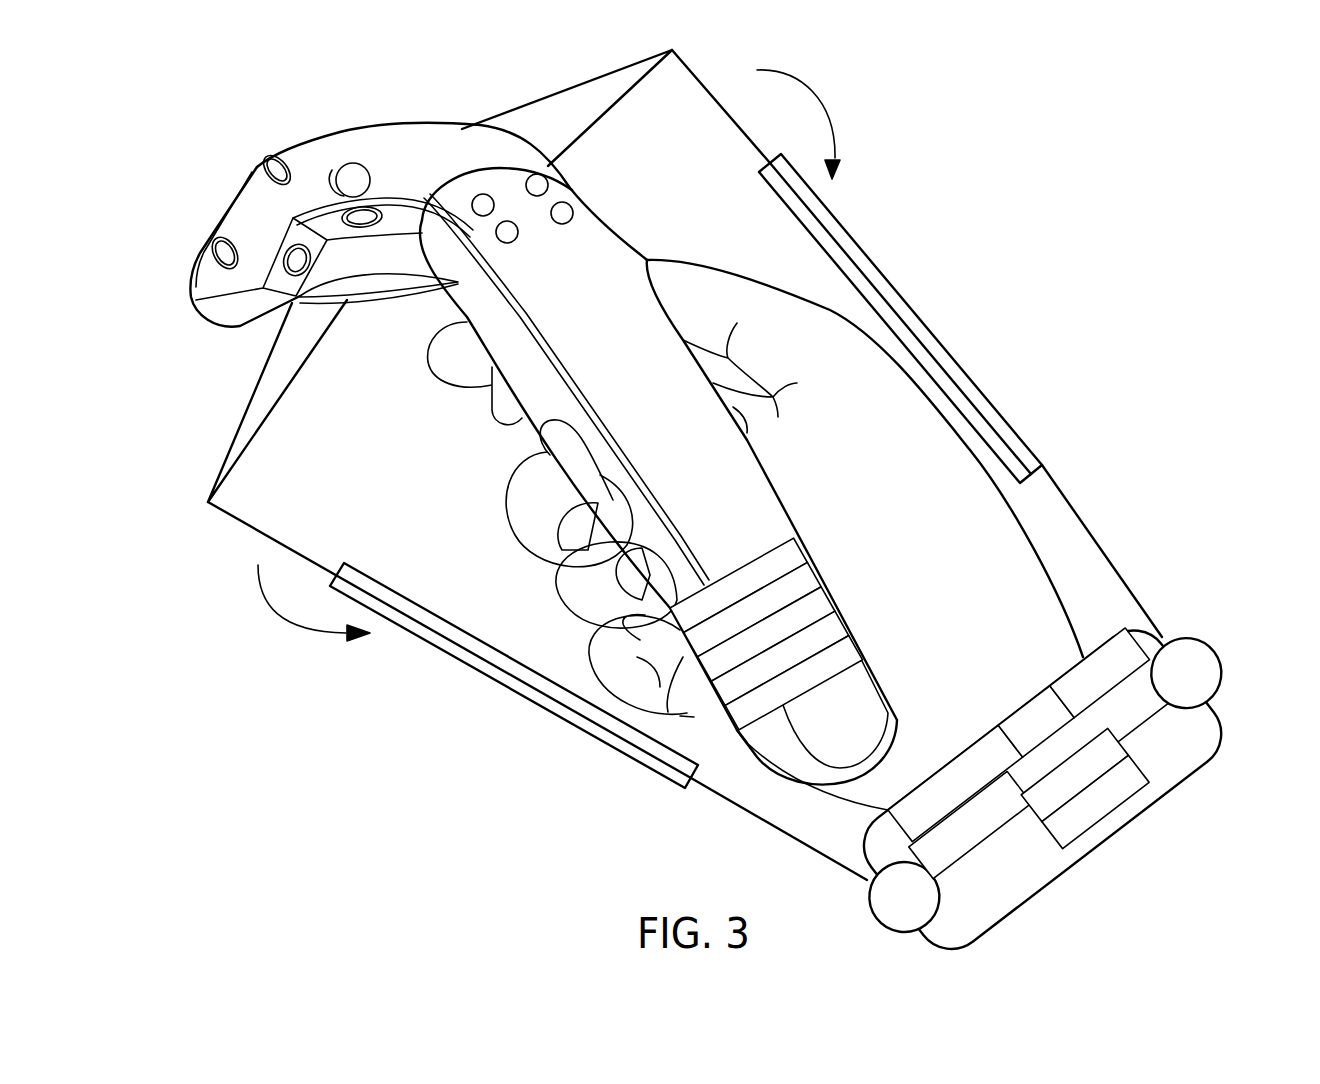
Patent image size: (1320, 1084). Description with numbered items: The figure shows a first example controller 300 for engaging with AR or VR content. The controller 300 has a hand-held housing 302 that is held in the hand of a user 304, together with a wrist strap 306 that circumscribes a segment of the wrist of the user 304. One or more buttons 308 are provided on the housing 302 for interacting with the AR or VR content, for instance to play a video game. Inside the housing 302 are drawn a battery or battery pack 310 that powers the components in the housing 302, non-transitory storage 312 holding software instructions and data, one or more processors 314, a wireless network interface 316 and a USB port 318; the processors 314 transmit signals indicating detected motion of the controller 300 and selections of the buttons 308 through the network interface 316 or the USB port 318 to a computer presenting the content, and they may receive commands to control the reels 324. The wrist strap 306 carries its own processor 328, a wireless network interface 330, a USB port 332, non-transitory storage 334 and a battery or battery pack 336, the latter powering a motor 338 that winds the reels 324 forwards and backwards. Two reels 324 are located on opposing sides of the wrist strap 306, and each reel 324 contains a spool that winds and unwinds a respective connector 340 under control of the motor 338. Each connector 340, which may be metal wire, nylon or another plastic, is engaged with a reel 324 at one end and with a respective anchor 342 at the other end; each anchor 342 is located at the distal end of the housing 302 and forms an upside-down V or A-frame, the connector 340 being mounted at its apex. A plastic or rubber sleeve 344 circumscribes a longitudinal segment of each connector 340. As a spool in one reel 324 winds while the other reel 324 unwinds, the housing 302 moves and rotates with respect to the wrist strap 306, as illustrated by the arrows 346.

The controller 300 is at (184, 128).
The hand-held housing 302 is at (593, 200).
The user 304 is at (921, 453).
The wrist strap 306 is at (1003, 907).
The buttons 308 is at (527, 177).
The battery or battery pack 310 is at (752, 562).
The non-transitory storage 312 is at (815, 555).
The processors 314 is at (826, 590).
The wireless network interface 316 is at (846, 622).
The USB port 318 is at (833, 680).
The reels 324 is at (1222, 680).
The processor 328 is at (977, 741).
The wireless network interface 330 is at (1065, 660).
The USB port 332 is at (1017, 700).
The non-transitory storage 334 is at (1005, 830).
The battery or battery pack 336 is at (1113, 807).
The motor 338 is at (1120, 746).
The connector 340 is at (1097, 537).
The anchor 342 is at (567, 90).
The sleeve 344 is at (913, 305).
The arrows 346 is at (828, 96).